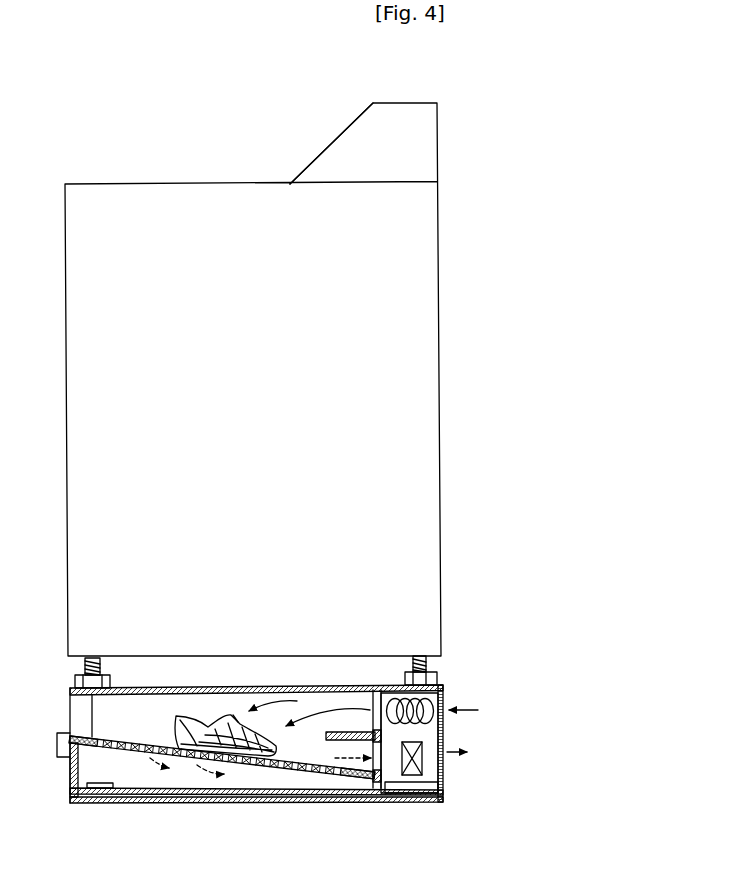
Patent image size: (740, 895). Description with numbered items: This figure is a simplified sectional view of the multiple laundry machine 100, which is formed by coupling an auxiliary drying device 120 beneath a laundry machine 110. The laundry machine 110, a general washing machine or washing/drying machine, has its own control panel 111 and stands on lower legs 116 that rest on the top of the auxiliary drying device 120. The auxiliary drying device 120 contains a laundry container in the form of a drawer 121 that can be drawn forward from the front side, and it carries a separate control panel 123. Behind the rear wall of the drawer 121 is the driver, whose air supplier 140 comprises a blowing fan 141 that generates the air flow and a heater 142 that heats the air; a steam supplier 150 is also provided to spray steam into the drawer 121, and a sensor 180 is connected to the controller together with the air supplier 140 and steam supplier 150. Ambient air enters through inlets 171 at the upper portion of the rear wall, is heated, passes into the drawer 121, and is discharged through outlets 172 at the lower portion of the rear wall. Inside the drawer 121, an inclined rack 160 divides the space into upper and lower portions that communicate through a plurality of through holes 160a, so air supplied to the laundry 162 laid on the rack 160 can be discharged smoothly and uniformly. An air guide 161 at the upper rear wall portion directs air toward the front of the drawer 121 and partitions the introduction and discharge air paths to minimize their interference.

The multiple laundry machine 100 is at (484, 134).
The laundry machine 110 is at (428, 244).
The control panel 111 is at (343, 145).
The lower leg 116 is at (428, 663).
The auxiliary drying device 120 is at (141, 807).
The drawer 121 is at (72, 770).
The control panel 123 is at (75, 717).
The air supplier 140 is at (517, 695).
The blowing fan 141 is at (444, 765).
The heater 142 is at (444, 700).
The steam supplier 150 is at (415, 794).
The rack 160 is at (277, 778).
The through holes 160a is at (181, 757).
The air guide 161 is at (345, 731).
The laundry 162 is at (229, 714).
The inlets 171 is at (444, 720).
The outlets 172 is at (445, 777).
The sensor 180 is at (98, 789).